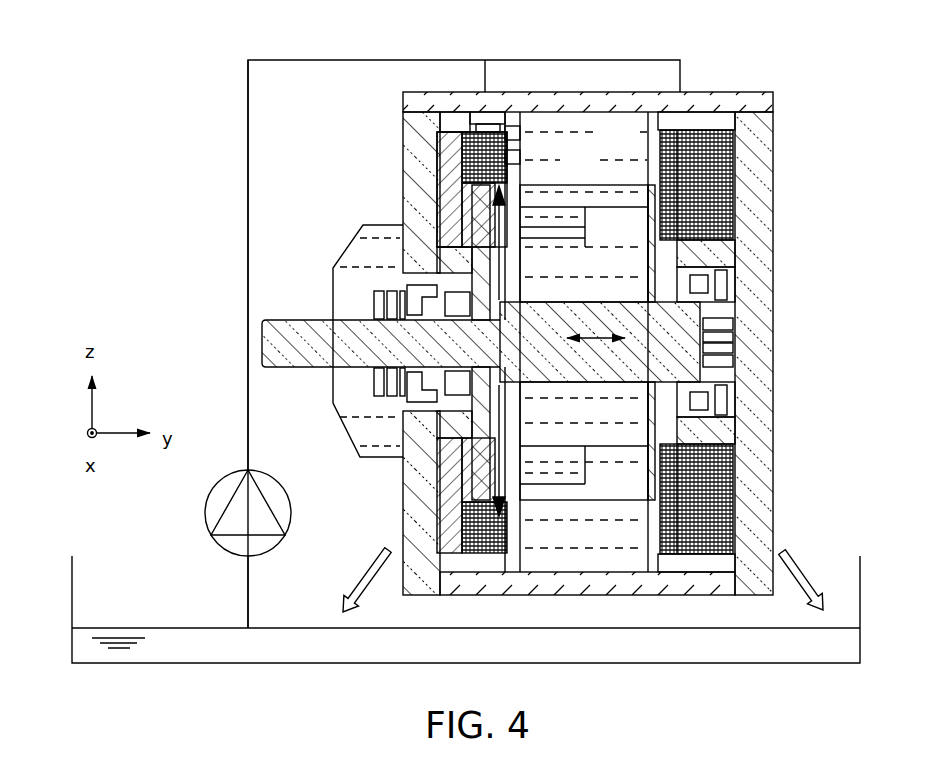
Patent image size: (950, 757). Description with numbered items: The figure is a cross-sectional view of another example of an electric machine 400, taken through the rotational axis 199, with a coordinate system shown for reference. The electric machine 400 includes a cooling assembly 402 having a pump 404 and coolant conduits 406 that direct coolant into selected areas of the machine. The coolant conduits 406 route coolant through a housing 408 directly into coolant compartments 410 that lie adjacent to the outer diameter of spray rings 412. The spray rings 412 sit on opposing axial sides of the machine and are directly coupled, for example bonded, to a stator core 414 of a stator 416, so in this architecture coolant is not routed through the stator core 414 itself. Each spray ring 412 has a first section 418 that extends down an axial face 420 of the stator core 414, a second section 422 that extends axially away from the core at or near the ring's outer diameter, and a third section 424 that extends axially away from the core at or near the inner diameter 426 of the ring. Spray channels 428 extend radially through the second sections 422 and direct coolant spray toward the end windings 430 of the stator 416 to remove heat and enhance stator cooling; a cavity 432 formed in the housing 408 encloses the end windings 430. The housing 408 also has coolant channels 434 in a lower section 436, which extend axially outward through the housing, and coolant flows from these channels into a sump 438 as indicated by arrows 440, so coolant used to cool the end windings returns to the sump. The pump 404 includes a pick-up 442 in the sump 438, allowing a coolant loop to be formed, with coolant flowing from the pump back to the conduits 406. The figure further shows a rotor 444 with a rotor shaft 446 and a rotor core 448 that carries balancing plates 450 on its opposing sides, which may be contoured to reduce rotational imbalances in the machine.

The electric machine 400 is at (113, 91).
The cooling assembly 402 is at (165, 506).
The pump 404 is at (216, 481).
The coolant conduits 406 is at (275, 60).
The housing 408 is at (362, 114).
The coolant compartments 410 is at (518, 172).
The spray rings 412 is at (436, 121).
The stator core 414 is at (640, 147).
The stator 416 is at (440, 152).
The first section 418 is at (513, 158).
The axial face 420 is at (447, 173).
The second section 422 is at (473, 118).
The third section 424 is at (453, 190).
The inner diameter 426 is at (430, 313).
The spray channels 428 is at (512, 134).
The end windings 430 is at (440, 167).
The cavity 432 is at (437, 162).
The coolant channels 434 is at (403, 516).
The lower section 436 is at (348, 510).
The sump 438 is at (176, 619).
The arrows 440 is at (355, 588).
The pick-up 442 is at (252, 597).
The rotor 444 is at (266, 304).
The rotor shaft 446 is at (290, 357).
The rotor core 448 is at (640, 256).
The balancing plates 450 is at (700, 285).
The rotational axis 199 is at (596, 342).